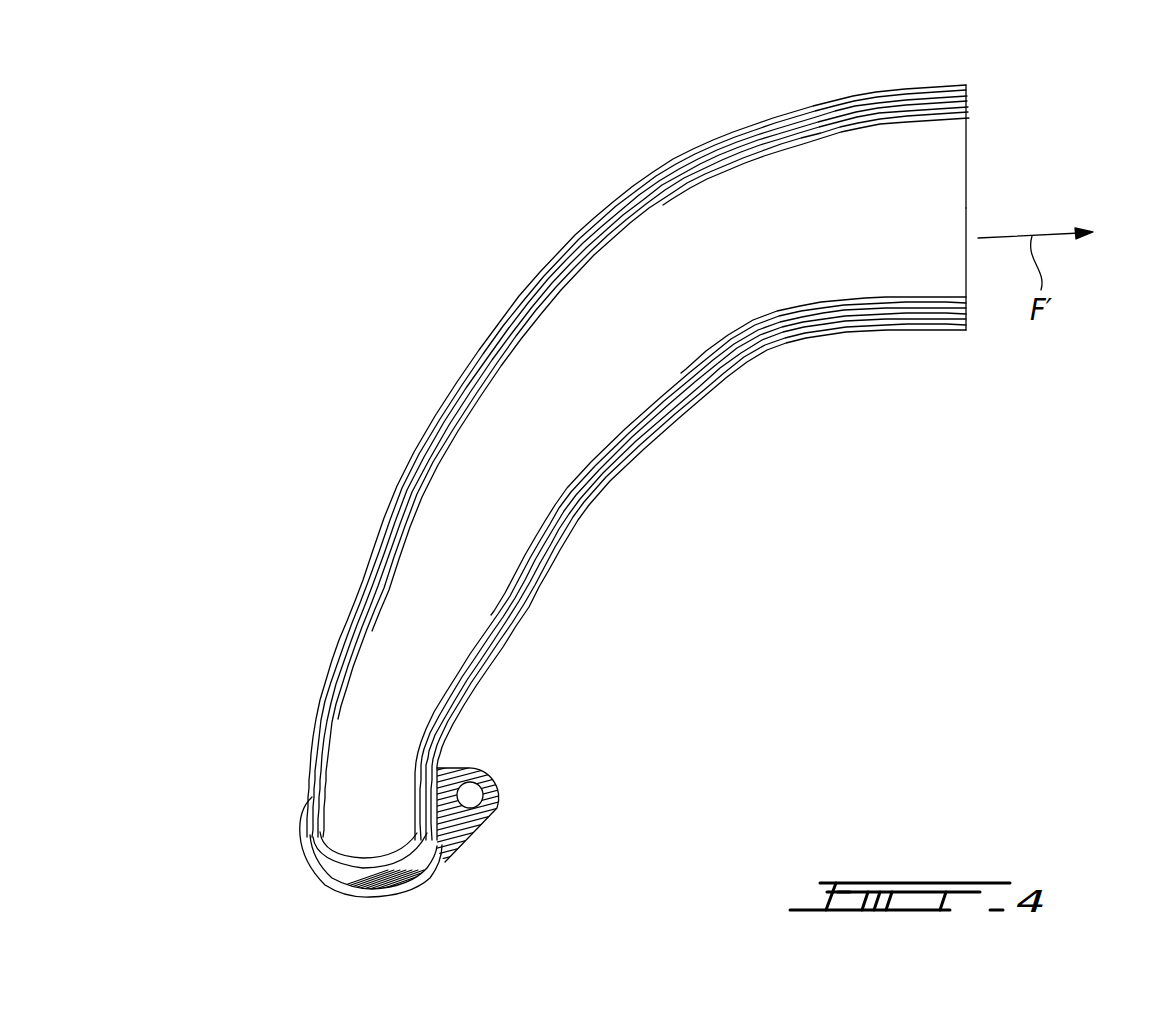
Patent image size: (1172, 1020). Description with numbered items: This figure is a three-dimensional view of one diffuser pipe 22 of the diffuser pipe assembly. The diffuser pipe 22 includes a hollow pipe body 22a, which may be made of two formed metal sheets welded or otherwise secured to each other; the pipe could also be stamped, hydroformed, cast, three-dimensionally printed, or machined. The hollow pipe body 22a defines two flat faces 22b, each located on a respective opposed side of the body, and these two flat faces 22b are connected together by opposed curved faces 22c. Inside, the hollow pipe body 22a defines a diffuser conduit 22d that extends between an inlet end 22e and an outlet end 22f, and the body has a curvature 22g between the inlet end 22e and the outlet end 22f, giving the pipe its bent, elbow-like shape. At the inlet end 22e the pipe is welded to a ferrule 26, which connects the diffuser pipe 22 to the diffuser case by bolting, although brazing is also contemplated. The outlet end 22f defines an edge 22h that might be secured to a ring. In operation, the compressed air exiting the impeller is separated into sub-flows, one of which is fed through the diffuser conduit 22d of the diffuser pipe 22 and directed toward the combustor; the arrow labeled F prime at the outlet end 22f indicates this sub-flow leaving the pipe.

The diffuser pipe 22 is at (366, 176).
The hollow pipe body 22a is at (580, 390).
The flat faces 22b is at (745, 188).
The curved faces 22c is at (472, 363).
The diffuser conduit 22d is at (887, 216).
The inlet end 22e is at (300, 837).
The outlet end 22f is at (965, 335).
The curvature 22g is at (450, 516).
The edge 22h is at (966, 175).
The ferrule 26 is at (478, 830).